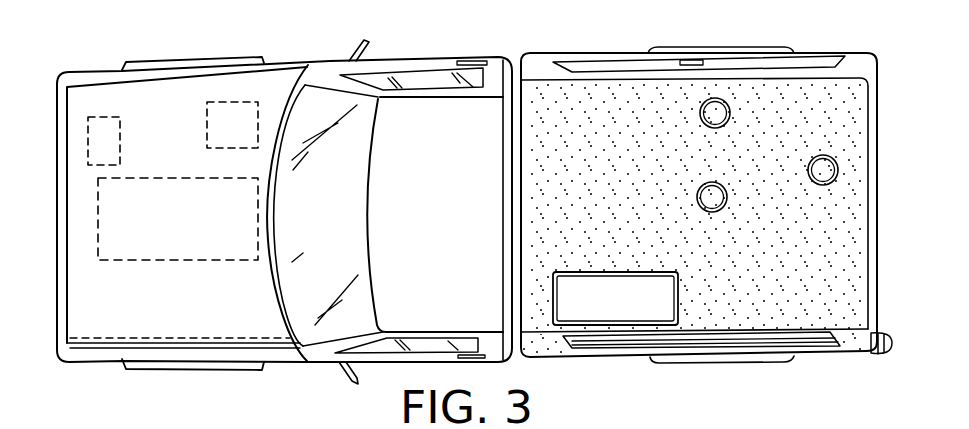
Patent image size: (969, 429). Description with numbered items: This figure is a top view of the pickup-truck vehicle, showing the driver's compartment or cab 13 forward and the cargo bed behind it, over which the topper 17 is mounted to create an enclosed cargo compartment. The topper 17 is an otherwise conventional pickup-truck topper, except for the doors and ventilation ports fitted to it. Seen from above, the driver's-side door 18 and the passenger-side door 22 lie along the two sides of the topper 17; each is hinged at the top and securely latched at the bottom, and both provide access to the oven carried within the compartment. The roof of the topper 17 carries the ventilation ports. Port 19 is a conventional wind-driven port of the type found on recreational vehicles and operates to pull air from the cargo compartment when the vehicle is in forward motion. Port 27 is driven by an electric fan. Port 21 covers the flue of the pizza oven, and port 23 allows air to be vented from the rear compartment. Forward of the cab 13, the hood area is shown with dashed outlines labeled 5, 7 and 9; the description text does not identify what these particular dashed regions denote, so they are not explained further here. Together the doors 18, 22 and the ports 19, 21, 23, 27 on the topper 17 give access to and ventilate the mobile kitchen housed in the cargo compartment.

The engine component (dashed) 5 is at (104, 118).
The engine compartment component (dashed) 7 is at (170, 238).
The engine component (dashed) 9 is at (229, 103).
The cab 13 is at (422, 220).
The topper 17 is at (853, 56).
The door 18 is at (730, 340).
The port 19 is at (603, 305).
The port 21 is at (712, 196).
The door 22 is at (733, 63).
The port 23 is at (822, 172).
The port 27 is at (707, 110).